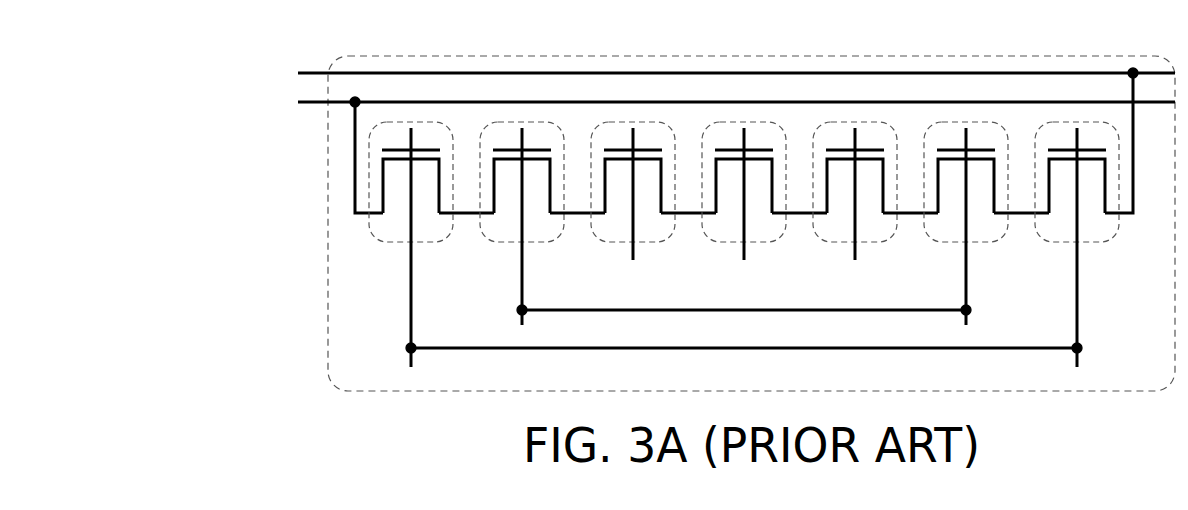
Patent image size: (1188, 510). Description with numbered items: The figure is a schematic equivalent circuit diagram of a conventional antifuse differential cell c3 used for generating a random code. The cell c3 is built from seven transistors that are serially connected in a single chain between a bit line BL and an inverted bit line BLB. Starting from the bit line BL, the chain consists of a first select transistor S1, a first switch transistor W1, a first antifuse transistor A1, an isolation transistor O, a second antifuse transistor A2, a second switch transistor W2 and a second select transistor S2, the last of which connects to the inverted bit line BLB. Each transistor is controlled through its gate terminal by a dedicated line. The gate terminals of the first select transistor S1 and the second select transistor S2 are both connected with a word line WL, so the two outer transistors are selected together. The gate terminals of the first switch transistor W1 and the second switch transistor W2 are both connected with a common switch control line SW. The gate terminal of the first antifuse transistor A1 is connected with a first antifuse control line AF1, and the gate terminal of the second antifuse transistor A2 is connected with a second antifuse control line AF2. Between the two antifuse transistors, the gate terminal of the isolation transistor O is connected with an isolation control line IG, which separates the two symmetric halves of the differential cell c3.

The inverted bit line BLB is at (707, 134).
The bit line BL is at (719, 149).
The first select transistor S1 is at (388, 243).
The first switch transistor W1 is at (512, 243).
The first antifuse transistor A1 is at (612, 243).
The first antifuse control line AF1 is at (633, 208).
The isolation control line IG is at (744, 208).
The isolation transistor O is at (780, 240).
The second antifuse control line AF2 is at (855, 208).
The second antifuse transistor A2 is at (891, 242).
The second switch transistor W2 is at (990, 242).
The second select transistor S2 is at (1105, 242).
The switch control line SW is at (744, 323).
The word line WL is at (744, 362).
The antifuse differential cell c3 is at (1161, 377).